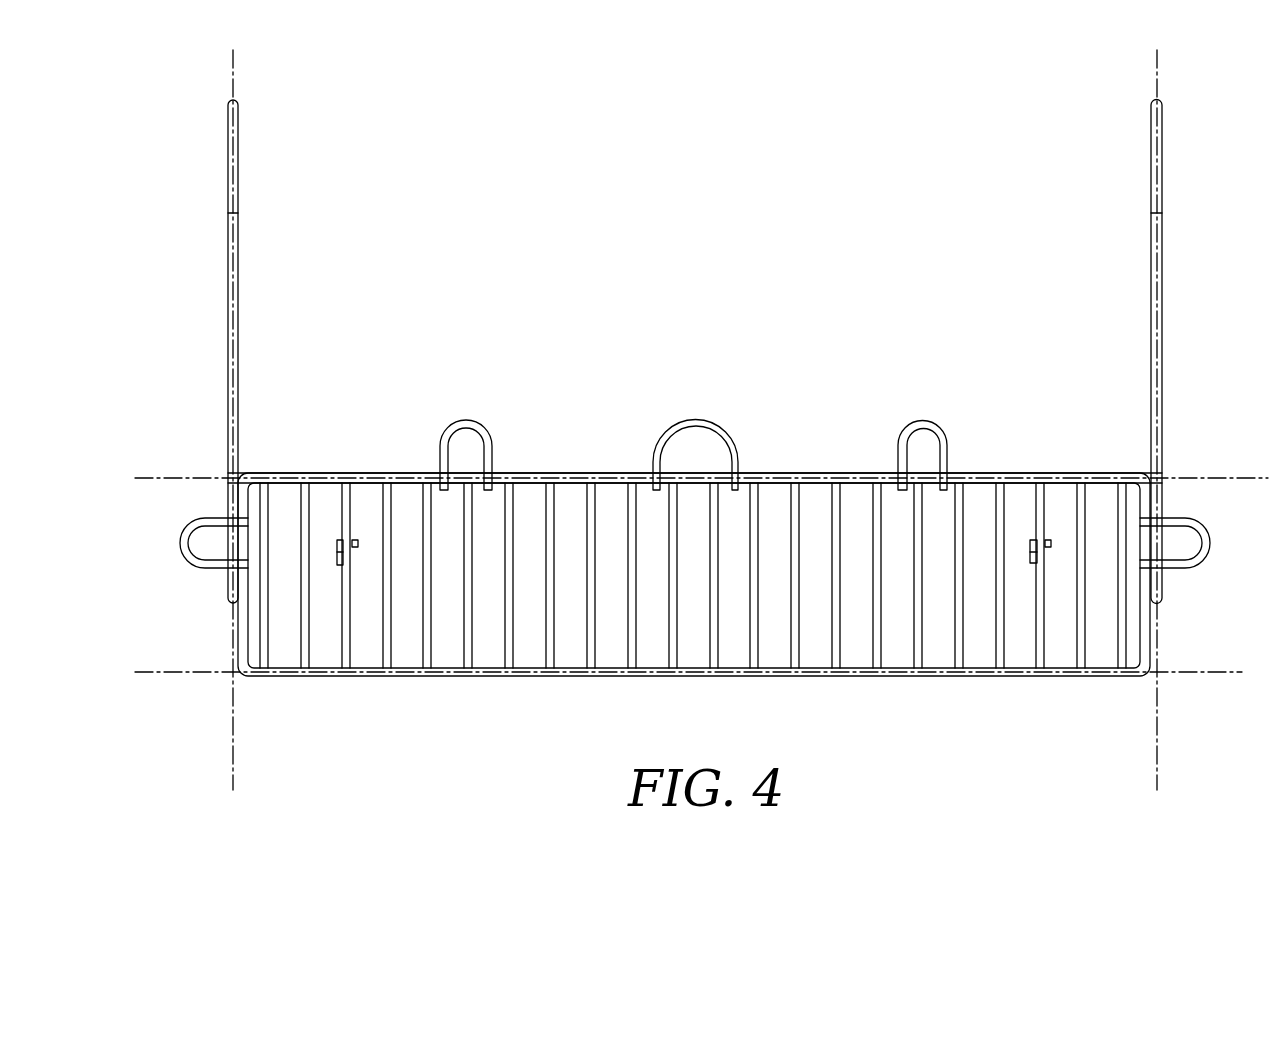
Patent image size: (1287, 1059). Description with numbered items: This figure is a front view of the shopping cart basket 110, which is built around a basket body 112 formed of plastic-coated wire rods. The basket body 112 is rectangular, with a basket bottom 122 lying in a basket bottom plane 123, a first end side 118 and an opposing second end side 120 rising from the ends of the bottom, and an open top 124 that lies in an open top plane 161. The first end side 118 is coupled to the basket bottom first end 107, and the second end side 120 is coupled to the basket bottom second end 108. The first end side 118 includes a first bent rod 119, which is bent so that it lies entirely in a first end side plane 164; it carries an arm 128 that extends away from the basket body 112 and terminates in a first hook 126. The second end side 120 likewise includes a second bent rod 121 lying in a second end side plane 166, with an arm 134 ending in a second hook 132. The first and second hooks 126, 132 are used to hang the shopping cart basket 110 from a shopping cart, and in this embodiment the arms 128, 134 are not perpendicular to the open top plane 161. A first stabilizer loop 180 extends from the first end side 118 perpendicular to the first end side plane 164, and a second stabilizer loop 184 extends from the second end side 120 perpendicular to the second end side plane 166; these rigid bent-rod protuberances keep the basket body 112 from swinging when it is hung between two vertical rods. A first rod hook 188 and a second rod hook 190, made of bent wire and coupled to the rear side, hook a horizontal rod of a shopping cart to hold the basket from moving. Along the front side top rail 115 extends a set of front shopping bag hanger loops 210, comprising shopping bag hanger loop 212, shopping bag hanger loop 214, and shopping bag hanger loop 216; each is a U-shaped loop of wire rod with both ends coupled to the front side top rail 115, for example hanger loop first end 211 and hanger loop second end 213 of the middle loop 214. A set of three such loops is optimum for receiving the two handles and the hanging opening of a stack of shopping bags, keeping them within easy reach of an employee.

The shopping cart basket 110 is at (695, 423).
The basket body 112 is at (800, 620).
The front side top rail 115 is at (860, 475).
The first end side 118 is at (174, 550).
The first bent rod 119 is at (171, 351).
The second end side 120 is at (1213, 550).
The second bent rod 121 is at (1208, 352).
The basket bottom 122 is at (464, 710).
The basket bottom plane 123 is at (1218, 672).
The open top 124 is at (390, 428).
The first hook 126 is at (228, 105).
The arm 128 is at (228, 255).
The second hook 132 is at (1162, 108).
The arm 134 is at (1162, 254).
The open top plane 161 is at (1235, 478).
The first end side plane 164 is at (233, 745).
The second end side plane 166 is at (1157, 728).
The first stabilizer loop 180 is at (172, 577).
The second stabilizer loop 184 is at (1209, 536).
The first rod hook 188 is at (337, 540).
The second rod hook 190 is at (1030, 540).
The basket bottom first end 107 is at (262, 692).
The basket bottom second end 108 is at (1135, 692).
The set of front shopping bag hanger loops 210 is at (694, 383).
The hanger loop first end 211 is at (652, 470).
The shopping bag hanger loop 212 is at (468, 420).
The hanger loop second end 213 is at (740, 470).
The shopping bag hanger loop 214 is at (696, 419).
The shopping bag hanger loop 216 is at (922, 420).